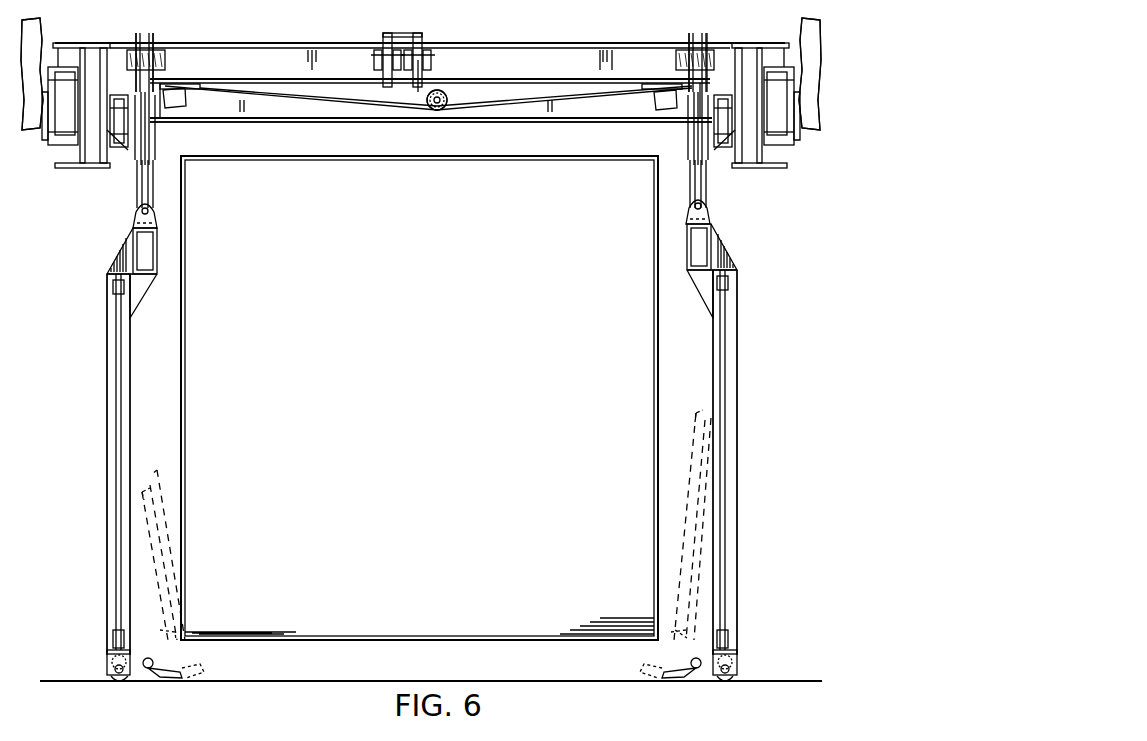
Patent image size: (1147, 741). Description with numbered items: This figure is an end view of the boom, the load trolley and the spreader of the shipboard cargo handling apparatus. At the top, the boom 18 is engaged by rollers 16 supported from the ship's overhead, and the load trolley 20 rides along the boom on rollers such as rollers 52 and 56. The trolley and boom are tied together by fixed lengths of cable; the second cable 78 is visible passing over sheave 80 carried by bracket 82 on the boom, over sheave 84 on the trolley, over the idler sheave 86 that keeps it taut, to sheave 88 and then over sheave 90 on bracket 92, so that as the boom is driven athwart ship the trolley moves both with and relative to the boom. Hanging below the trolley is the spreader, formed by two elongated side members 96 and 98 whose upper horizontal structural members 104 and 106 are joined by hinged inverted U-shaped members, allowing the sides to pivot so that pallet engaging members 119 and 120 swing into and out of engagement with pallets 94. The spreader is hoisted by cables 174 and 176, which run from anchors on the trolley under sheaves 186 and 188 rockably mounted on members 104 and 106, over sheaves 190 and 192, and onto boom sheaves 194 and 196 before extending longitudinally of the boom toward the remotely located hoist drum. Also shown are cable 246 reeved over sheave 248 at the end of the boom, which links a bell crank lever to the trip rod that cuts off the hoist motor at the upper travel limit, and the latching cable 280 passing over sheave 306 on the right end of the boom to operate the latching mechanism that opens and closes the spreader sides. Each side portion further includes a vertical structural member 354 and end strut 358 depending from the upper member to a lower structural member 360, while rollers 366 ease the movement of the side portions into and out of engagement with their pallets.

The rollers 16 is at (38, 150).
The boom 18 is at (556, 48).
The load trolley 20 is at (538, 128).
The roller 52 is at (727, 128).
The roller 56 is at (112, 130).
The second cable 78 is at (335, 106).
The sheave 80 is at (160, 34).
The bracket 82 is at (165, 58).
The sheave 84 is at (195, 85).
The idler sheave 86 is at (439, 111).
The sheave 88 is at (636, 84).
The sheave 90 is at (683, 36).
The bracket 92 is at (676, 58).
The pallets 94 is at (253, 672).
The side member 96 is at (108, 436).
The side member 98 is at (740, 426).
The upper horizontal structural member 104 is at (157, 250).
The upper horizontal structural member 106 is at (687, 248).
The pallet engaging member 119 is at (148, 672).
The pallet engaging member 120 is at (702, 675).
The hoist cable 174 is at (140, 30).
The hoist cable 176 is at (703, 30).
The sheave 186 is at (152, 170).
The sheave 188 is at (690, 170).
The sheave 190 is at (150, 140).
The sheave 192 is at (692, 132).
The sheave 194 is at (132, 36).
The sheave 196 is at (711, 36).
The cable 246 is at (410, 34).
The sheave 248 is at (383, 34).
The latching cable 280 is at (425, 86).
The sheave 306 is at (424, 34).
The vertical structural member 354 is at (108, 414).
The end strut 358 is at (117, 364).
The lower structural member 360 is at (109, 664).
The rollers 366 is at (117, 688).